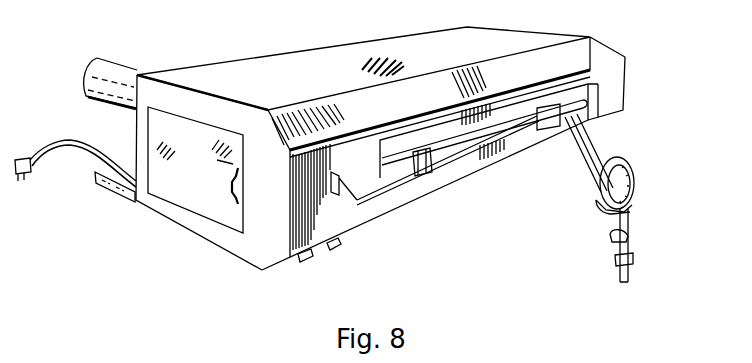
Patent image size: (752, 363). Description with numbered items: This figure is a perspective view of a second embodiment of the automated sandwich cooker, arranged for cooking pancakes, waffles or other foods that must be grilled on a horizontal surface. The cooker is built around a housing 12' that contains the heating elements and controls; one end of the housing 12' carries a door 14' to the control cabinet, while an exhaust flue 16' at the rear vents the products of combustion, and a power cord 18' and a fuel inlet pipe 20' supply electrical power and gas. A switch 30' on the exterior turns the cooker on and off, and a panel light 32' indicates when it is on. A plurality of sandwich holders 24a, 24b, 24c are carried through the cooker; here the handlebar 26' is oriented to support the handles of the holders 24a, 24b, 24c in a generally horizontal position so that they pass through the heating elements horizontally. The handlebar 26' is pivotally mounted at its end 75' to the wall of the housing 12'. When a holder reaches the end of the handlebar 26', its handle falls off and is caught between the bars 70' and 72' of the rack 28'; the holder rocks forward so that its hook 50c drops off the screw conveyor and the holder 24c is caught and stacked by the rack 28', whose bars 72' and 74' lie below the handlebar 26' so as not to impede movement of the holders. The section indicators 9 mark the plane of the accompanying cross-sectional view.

The housing 12' is at (380, 155).
The door 14' is at (185, 177).
The exhaust flue 16' is at (117, 61).
The power cord 18' is at (75, 144).
The inlet pipe 20' is at (95, 194).
The sandwich holder 24a is at (420, 183).
The sandwich holder 24b is at (533, 136).
The sandwich holder 24c is at (614, 269).
The handlebar 26' is at (445, 183).
The rack 28' is at (663, 144).
The switch 30' is at (355, 255).
The panel light 32' is at (313, 274).
The hook 50c is at (613, 237).
The bar 70' is at (592, 153).
The bar 72' is at (592, 183).
The bar 74' is at (592, 220).
The end 75' is at (498, 201).
The section line 9- 9 is at (380, 142).